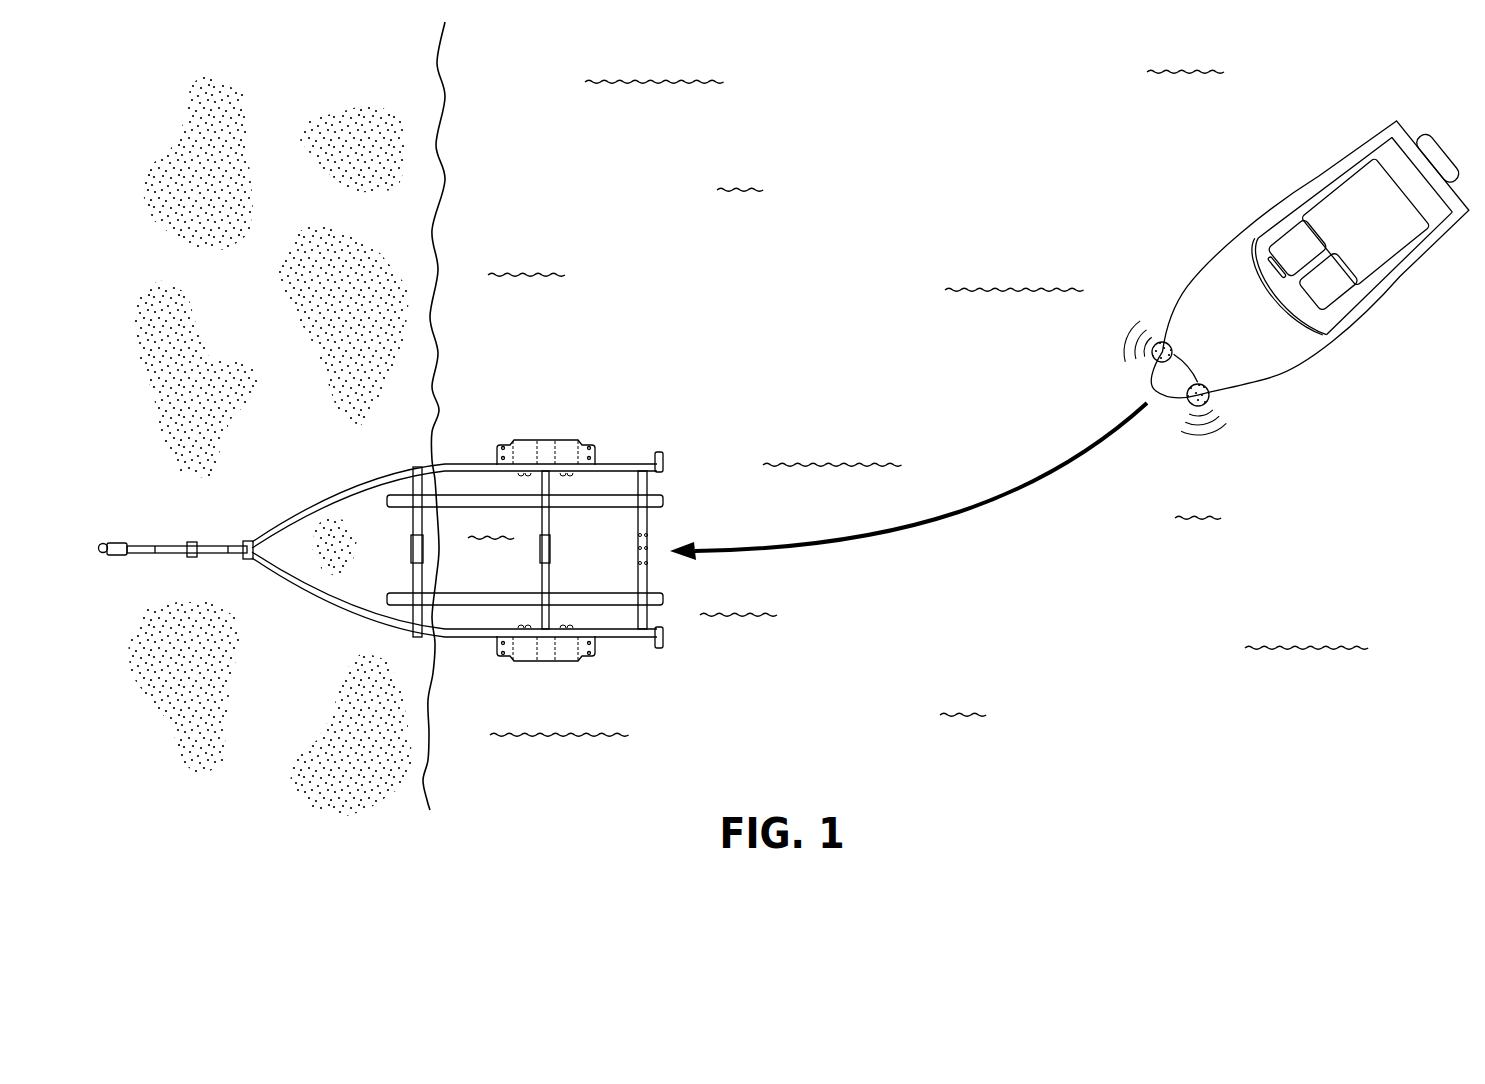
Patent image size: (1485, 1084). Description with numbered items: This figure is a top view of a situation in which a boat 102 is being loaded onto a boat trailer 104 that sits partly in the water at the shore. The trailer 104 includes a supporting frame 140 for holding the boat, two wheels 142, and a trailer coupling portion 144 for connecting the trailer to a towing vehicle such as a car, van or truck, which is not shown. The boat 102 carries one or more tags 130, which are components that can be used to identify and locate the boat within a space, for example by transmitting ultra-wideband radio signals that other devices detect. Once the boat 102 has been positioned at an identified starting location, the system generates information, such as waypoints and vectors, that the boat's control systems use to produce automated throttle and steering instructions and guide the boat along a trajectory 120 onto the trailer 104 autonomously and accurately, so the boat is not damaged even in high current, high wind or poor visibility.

The boat 102 is at (1285, 200).
The boat trailer 104 is at (302, 645).
The trajectory 120 is at (963, 513).
The tag 130 is at (1200, 386).
The supporting frame 140 is at (328, 495).
The wheels 142 is at (548, 440).
The trailer coupling portion 144 is at (113, 543).